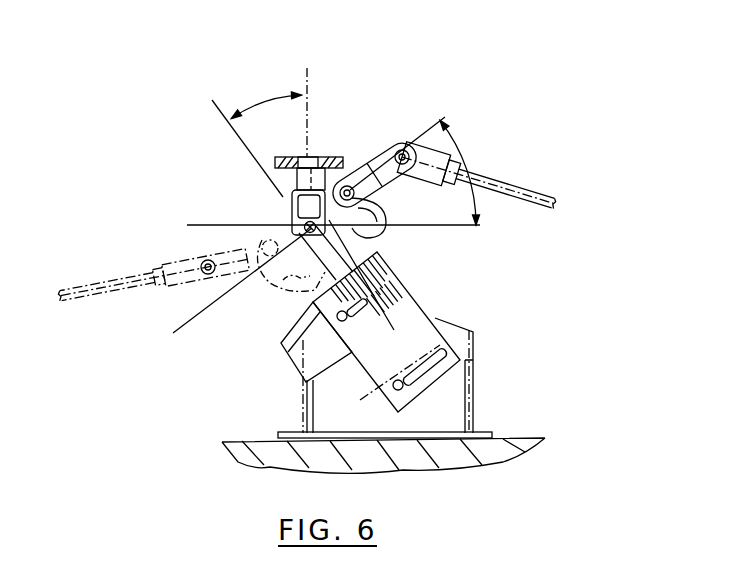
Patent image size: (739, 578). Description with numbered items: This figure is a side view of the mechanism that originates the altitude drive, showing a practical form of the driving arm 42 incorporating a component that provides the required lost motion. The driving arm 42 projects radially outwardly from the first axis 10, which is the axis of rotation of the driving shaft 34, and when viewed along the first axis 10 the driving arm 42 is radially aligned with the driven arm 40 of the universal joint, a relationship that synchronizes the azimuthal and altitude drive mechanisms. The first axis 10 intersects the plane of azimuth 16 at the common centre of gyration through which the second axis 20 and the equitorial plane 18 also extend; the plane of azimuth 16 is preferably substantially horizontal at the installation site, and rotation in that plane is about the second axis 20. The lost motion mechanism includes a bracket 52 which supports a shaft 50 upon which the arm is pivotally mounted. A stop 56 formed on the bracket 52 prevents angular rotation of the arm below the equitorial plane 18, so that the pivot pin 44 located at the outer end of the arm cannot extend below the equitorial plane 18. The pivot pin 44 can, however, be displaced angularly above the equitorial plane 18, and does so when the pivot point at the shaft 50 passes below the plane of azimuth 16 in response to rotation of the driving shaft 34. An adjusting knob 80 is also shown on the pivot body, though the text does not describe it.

The first axis 10 is at (212, 112).
The plane of azimuth 16 is at (200, 224).
The equitorial plane 18 is at (208, 310).
The second axis 20 is at (306, 88).
The driving shaft 34 is at (378, 257).
The driven arm 40 is at (291, 215).
The driving arm 42 is at (410, 178).
The pivot pin 44 is at (403, 150).
The shaft 50 is at (351, 187).
The bracket 52 is at (374, 229).
The stop 56 is at (379, 205).
The adjusting knob 80 is at (330, 157).